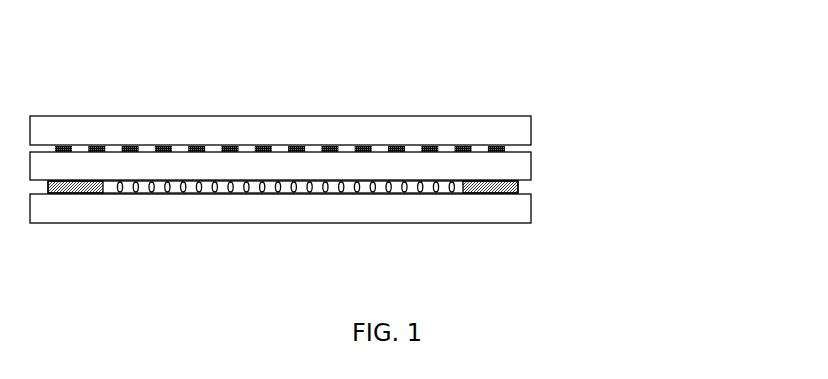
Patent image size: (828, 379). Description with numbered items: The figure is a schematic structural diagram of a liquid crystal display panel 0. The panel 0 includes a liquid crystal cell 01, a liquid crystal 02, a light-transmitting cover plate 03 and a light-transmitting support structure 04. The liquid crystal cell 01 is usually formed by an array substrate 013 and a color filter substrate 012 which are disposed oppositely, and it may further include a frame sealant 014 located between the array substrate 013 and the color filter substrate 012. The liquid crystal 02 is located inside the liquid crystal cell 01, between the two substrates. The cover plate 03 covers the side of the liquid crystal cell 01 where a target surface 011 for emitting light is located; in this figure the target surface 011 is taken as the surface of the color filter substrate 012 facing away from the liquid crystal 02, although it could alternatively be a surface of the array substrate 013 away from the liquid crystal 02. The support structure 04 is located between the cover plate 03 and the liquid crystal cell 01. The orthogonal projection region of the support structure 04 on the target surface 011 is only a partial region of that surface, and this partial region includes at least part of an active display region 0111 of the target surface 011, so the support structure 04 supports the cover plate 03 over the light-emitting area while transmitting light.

The liquid crystal display panel 0 is at (310, 39).
The liquid crystal cell 01 is at (373, 216).
The target surface 011 is at (81, 140).
The active display region 0111 is at (463, 152).
The color filter substrate 012 is at (532, 167).
The array substrate 013 is at (532, 217).
The frame sealant 014 is at (533, 188).
The liquid crystal 02 is at (388, 205).
The light-transmitting cover plate 03 is at (532, 123).
The light-transmitting support structure 04 is at (525, 149).